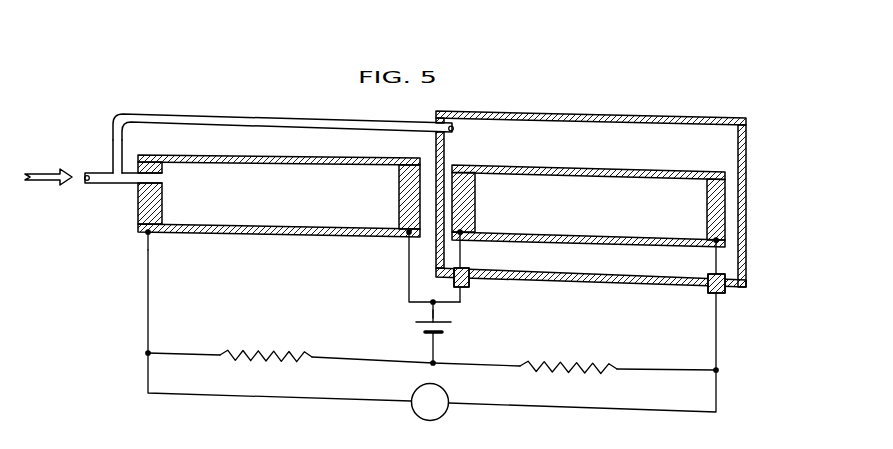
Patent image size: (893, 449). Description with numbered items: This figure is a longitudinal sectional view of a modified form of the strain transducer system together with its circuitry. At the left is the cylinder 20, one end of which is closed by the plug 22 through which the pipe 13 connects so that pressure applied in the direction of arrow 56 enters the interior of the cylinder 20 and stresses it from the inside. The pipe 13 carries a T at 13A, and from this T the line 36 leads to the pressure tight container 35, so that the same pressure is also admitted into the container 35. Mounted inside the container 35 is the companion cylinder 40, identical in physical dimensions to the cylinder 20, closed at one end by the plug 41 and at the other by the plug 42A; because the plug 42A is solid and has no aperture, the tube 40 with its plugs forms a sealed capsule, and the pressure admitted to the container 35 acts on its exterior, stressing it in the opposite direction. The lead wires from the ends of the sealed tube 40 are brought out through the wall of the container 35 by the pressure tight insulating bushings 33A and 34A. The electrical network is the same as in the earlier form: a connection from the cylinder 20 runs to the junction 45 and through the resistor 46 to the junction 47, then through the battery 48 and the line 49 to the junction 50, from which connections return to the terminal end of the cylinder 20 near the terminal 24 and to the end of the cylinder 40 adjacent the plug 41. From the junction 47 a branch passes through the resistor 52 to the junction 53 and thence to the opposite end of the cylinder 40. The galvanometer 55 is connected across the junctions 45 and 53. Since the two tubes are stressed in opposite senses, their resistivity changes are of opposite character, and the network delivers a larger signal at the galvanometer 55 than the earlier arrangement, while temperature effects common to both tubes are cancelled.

The pipe 13 is at (104, 185).
The T 13A is at (114, 167).
The cylinder 20 is at (345, 242).
The plug 22 is at (157, 208).
The terminal 24 is at (148, 235).
The pressure tight insulating bushing 33A is at (470, 285).
The pressure tight insulating bushing 34A is at (712, 294).
The pressure tight container 35 is at (575, 112).
The line 36 is at (272, 121).
The cylinder 40 is at (599, 231).
The plug 41 is at (468, 216).
The plug 42A is at (711, 204).
The junction 45 is at (145, 354).
The resistor 46 is at (282, 355).
The junction 47 is at (436, 361).
The battery 48 is at (420, 323).
The line 49 is at (428, 311).
The junction 50 is at (434, 301).
The resistor 52 is at (570, 363).
The junction 53 is at (720, 368).
The galvanometer 55 is at (444, 391).
The arrow 56 is at (57, 182).